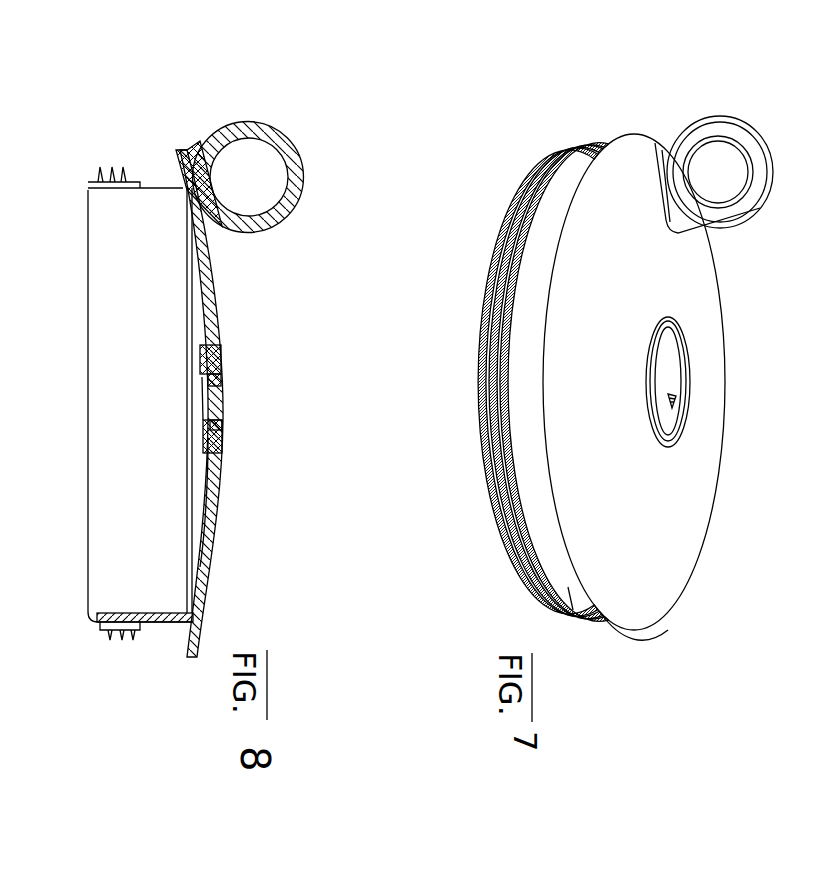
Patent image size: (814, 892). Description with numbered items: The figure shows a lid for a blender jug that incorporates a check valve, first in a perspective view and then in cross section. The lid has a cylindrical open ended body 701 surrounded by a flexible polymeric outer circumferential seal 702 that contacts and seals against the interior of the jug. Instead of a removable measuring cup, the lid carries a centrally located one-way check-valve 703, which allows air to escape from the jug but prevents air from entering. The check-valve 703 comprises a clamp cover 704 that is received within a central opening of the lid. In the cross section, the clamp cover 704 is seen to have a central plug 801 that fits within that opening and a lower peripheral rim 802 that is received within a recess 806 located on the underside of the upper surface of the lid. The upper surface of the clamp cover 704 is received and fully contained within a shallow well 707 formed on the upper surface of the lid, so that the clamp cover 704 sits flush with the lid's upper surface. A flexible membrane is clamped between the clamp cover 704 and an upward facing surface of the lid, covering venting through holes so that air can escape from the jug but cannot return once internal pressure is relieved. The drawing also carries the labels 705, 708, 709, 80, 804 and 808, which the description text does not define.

In FIG. 7, the cylindrical open ended body 701 is at (567, 610).
In FIG. 8, the outer circumferential seal 702 is at (256, 370).
In FIG. 7, the outer circumferential seal 702 is at (547, 153).
In FIG. 7, the check-valve 703 is at (685, 347).
In FIG. 8, the clamp cover 704 is at (222, 427).
In FIG. 7, the clamp cover 704 is at (660, 442).
In FIG. 7, the attachment loop 705 is at (740, 217).
In FIG. 7, the well 707 is at (683, 420).
In FIG. 7, the lower face portion 708 is at (658, 588).
In FIG. 7, the opening flange 709 is at (690, 384).
In FIG. 8, the lower fastener clip 80 is at (193, 427).
In FIG. 8, the central plug 801 is at (205, 393).
In FIG. 8, the lower peripheral rim 802 is at (222, 390).
In FIG. 8, the plate lower portion 804 is at (218, 530).
In FIG. 8, the recess 806 is at (200, 347).
In FIG. 8, the housing body 808 is at (203, 428).